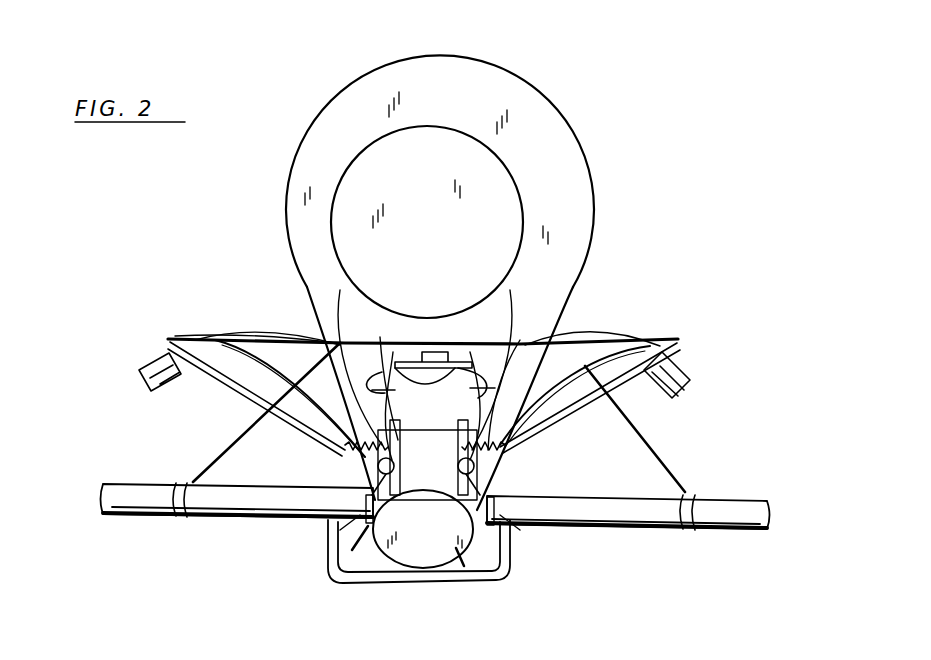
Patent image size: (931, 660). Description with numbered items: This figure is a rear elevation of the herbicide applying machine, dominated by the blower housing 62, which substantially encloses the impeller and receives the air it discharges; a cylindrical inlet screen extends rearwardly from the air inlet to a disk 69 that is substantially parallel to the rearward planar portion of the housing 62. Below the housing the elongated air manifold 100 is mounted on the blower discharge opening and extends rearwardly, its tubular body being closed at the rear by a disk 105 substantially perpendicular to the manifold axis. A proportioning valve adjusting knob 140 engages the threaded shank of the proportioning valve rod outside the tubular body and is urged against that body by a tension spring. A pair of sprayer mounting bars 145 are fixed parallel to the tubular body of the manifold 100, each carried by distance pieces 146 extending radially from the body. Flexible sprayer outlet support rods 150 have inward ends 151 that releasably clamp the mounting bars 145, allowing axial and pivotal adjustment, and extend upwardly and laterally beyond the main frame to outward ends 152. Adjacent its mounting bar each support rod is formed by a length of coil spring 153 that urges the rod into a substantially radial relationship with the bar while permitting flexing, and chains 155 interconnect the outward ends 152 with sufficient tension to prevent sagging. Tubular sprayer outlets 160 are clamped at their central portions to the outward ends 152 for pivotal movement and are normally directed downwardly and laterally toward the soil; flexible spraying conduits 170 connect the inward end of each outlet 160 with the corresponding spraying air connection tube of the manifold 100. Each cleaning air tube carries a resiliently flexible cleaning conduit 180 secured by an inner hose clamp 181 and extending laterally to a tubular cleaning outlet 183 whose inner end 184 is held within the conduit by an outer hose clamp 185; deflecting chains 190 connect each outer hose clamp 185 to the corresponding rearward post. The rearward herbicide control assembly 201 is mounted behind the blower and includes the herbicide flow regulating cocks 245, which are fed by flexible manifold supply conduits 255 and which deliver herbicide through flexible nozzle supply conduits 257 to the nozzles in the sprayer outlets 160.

The housing 62 is at (605, 177).
The disk 69 is at (432, 182).
The air manifold 100 is at (460, 555).
The disk 105 is at (437, 570).
The proportioning valve adjusting knob 140 is at (368, 540).
The sprayer mounting bars 145 is at (338, 345).
The distance pieces 146 is at (423, 529).
The sprayer outlet support rods 150 is at (240, 396).
The inward ends 151 is at (378, 484).
The outward ends 152 is at (168, 339).
The coil spring 153 is at (348, 462).
The chains 155 is at (174, 337).
The tubular sprayer outlets 160 is at (139, 372).
The spraying conduits 170 is at (245, 372).
The cleaning conduit 180 is at (435, 506).
The inner hose clamp 181 is at (345, 524).
The tubular cleaning outlet 183 is at (128, 476).
The inner end 184 is at (186, 483).
The outer hose clamp 185 is at (182, 518).
The deflecting chains 190 is at (258, 428).
The rearward herbicide control assembly 201 is at (444, 340).
The herbicide flow regulating cocks 245 is at (470, 352).
The manifold supply conduits 255 is at (380, 337).
The nozzle supply conduits 257 is at (262, 330).